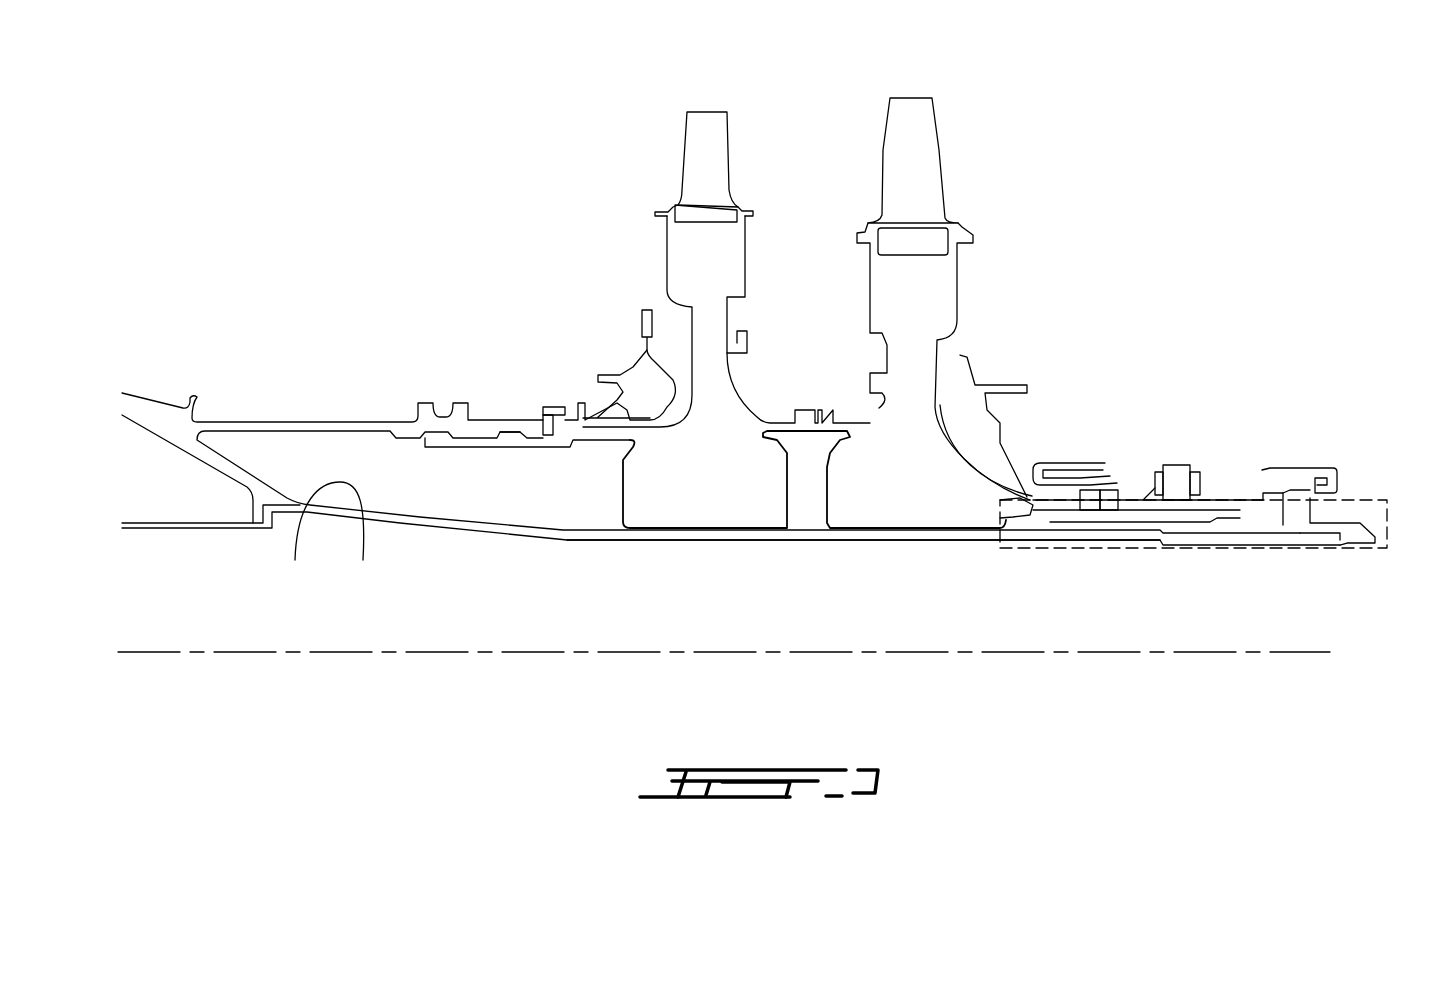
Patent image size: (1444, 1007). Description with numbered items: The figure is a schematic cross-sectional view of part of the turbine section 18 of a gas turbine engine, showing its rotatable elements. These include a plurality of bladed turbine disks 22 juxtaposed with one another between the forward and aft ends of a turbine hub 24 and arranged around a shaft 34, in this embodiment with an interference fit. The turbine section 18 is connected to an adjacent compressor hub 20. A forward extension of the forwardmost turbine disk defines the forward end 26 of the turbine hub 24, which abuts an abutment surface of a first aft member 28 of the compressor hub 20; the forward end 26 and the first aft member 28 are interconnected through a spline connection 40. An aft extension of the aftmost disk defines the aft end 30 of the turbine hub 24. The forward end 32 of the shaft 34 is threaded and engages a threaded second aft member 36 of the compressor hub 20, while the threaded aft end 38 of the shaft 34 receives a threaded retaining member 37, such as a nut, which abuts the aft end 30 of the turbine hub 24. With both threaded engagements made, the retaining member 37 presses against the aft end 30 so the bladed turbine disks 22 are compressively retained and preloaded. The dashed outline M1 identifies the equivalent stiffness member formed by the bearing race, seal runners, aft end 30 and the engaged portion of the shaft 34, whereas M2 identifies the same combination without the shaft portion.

The turbine section 18 is at (1055, 160).
The compressor hub 20 is at (243, 410).
The bladed turbine disks 22 is at (893, 432).
The turbine hub 24 is at (512, 462).
The forward end of the turbine hub 26 is at (556, 405).
The first aft member 28 is at (508, 430).
The aft end of the turbine hub 30 is at (1180, 500).
The forward end of the shaft 32 is at (296, 525).
The shaft 34 is at (912, 558).
The second aft member 36 is at (368, 508).
The retaining member 37 is at (1293, 518).
The aft end of the shaft 38 is at (1328, 547).
The spline connection 40 is at (484, 432).
The equivalent stiffness member M1 is at (1366, 500).
The equivalent stiffness member without the shaft portion M2 is at (1283, 528).